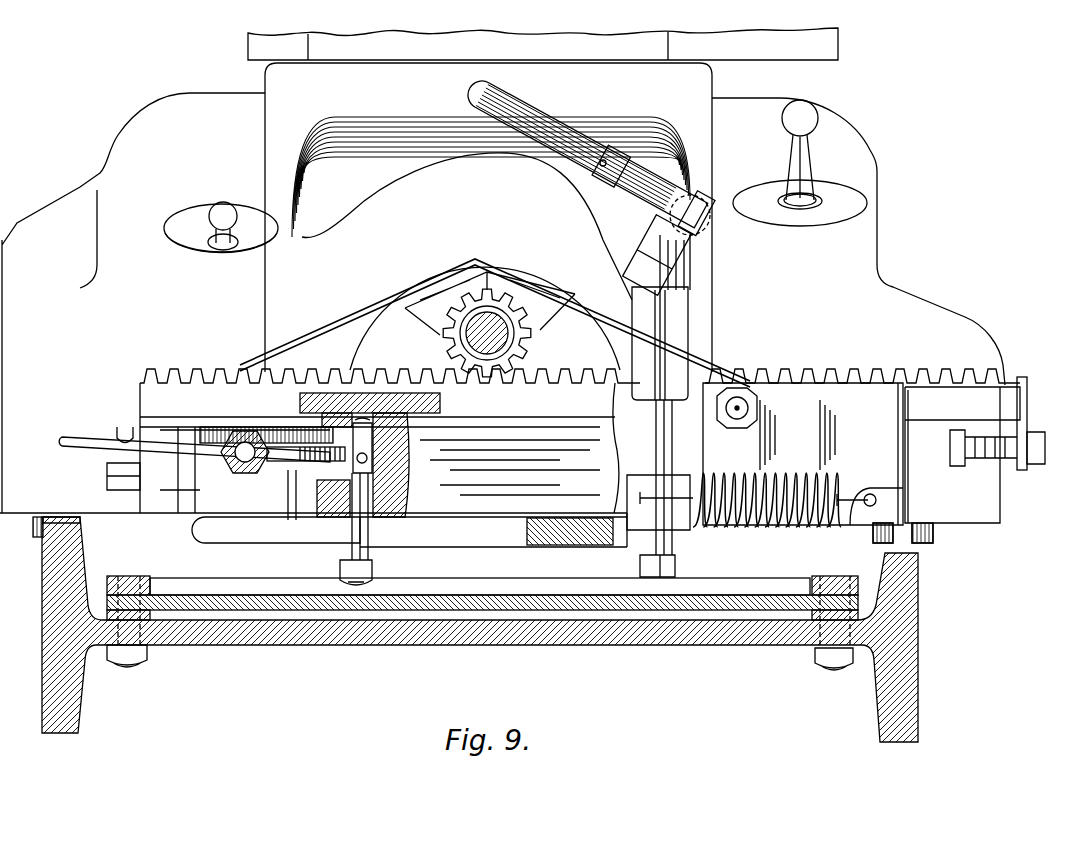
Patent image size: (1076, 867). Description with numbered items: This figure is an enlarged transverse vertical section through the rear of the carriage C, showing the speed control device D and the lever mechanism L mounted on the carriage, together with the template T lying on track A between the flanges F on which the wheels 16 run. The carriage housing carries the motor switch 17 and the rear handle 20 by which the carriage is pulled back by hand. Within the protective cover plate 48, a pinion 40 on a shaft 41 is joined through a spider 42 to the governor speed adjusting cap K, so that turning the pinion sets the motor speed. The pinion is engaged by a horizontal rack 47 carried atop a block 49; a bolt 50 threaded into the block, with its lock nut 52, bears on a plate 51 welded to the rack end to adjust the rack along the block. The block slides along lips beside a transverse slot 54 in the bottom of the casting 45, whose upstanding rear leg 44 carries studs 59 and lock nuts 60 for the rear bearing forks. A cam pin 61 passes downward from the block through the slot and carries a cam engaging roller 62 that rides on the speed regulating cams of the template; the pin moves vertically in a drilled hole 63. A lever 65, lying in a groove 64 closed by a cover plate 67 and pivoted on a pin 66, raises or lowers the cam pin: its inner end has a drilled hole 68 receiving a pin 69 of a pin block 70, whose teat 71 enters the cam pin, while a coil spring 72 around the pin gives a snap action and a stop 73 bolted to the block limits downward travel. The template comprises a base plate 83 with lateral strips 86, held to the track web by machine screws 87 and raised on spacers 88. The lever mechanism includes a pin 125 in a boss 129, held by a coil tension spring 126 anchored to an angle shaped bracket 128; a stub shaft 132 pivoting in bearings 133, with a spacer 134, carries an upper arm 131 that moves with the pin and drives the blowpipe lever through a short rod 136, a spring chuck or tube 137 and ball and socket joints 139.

The carriage C is at (92, 154).
The speed control device D is at (337, 288).
The speed adjusting cap K is at (389, 347).
The lever mechanism L is at (548, 105).
The track A is at (380, 658).
The template T is at (187, 570).
The flanges F is at (67, 505).
The wheels 16 is at (36, 528).
The switch 17 is at (222, 208).
The rear handle 20 is at (372, 112).
The pinion 40 is at (487, 288).
The shaft 41 is at (470, 340).
The spider 42 is at (430, 300).
The rear leg 44 is at (630, 447).
The casting 45 is at (572, 547).
The rack 47 is at (567, 378).
The cover plate 48 is at (343, 330).
The block 49 is at (155, 500).
The bolt 50 is at (1036, 466).
The plate 51 is at (1030, 380).
The lock nut 52 is at (960, 450).
The transverse slot 54 is at (260, 532).
The studs 59 is at (749, 408).
The lock nuts 60 is at (738, 393).
The cam pin 61 is at (370, 495).
The cam engaging roller 62 is at (340, 570).
The drilled hole 63 is at (408, 500).
The groove 64 is at (288, 476).
The lever 65 is at (76, 446).
The pin 66 is at (245, 466).
The cover plate 67 is at (182, 470).
The drilled hole 68 is at (270, 466).
The pin 69 is at (285, 425).
The pin block 70 is at (343, 463).
The teat 71 is at (409, 455).
The coil spring 72 is at (322, 450).
The stop 73 is at (123, 428).
The base plate 83 is at (510, 608).
The lateral strips 86 is at (128, 580).
The machine screws 87 is at (127, 668).
The spacers 88 is at (140, 615).
The pin 125 is at (676, 562).
The coil tension spring 126 is at (796, 478).
The angle shaped bracket 128 is at (866, 508).
The boss 129 is at (640, 535).
The upper arm 131 is at (692, 268).
The stub shaft 132 is at (660, 440).
The bearings 133 is at (712, 350).
The spacer 134 is at (665, 300).
The short rod 136 is at (622, 205).
The spring chuck or tube 137 is at (535, 150).
The ball and socket joints 139 is at (700, 197).